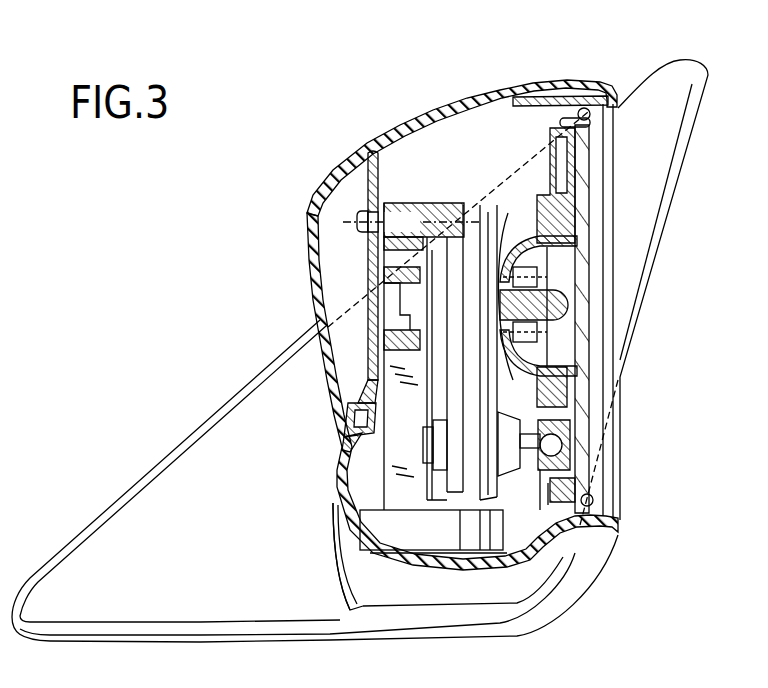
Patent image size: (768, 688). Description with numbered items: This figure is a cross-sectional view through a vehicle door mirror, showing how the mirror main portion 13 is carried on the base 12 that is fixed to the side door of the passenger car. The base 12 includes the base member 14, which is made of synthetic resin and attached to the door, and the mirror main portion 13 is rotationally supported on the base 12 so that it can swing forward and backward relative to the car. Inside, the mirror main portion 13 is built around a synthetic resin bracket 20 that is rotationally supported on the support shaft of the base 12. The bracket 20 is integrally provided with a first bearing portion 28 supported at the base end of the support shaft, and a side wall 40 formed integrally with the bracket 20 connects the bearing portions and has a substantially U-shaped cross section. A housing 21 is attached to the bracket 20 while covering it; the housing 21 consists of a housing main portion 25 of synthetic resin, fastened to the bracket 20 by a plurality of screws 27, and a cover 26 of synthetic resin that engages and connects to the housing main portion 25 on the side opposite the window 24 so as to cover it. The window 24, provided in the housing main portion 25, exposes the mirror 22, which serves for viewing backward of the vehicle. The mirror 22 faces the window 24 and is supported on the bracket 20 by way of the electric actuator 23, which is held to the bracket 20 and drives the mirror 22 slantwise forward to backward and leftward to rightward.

The base 12 is at (233, 387).
The mirror main portion 13 is at (449, 290).
The base member 14 is at (180, 491).
The bracket 20 is at (438, 204).
The housing 21 is at (448, 210).
The mirror 22 is at (589, 333).
The electric actuator 23 is at (450, 397).
The window 24 is at (600, 110).
The housing main portion 25 is at (366, 170).
The cover 26 is at (311, 182).
The screws 27 is at (357, 222).
The first bearing portion 28 is at (333, 496).
The side wall 40 is at (390, 367).